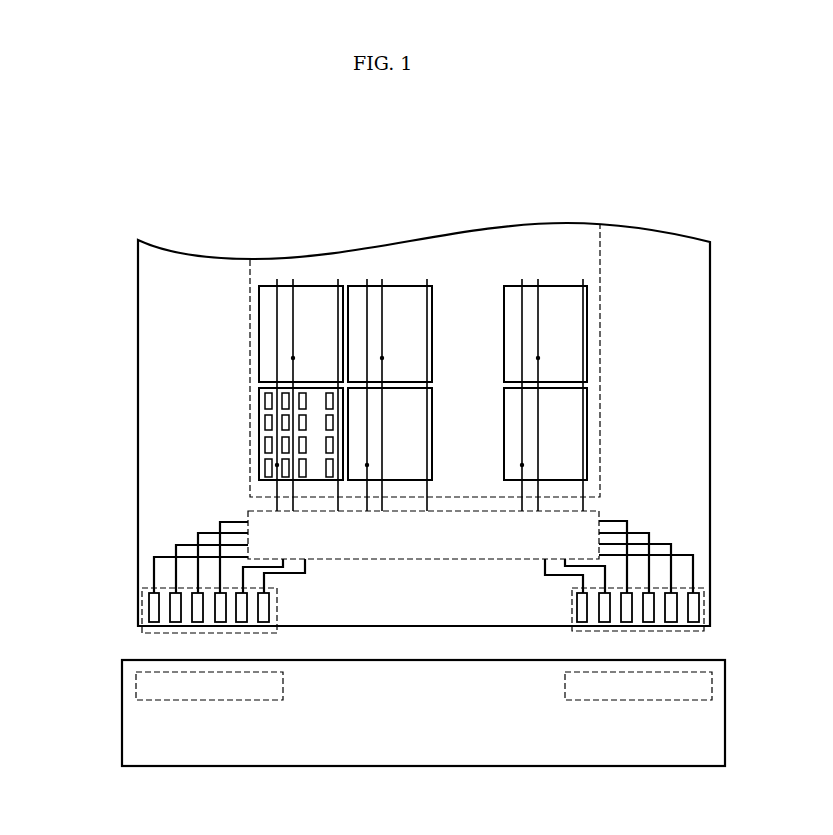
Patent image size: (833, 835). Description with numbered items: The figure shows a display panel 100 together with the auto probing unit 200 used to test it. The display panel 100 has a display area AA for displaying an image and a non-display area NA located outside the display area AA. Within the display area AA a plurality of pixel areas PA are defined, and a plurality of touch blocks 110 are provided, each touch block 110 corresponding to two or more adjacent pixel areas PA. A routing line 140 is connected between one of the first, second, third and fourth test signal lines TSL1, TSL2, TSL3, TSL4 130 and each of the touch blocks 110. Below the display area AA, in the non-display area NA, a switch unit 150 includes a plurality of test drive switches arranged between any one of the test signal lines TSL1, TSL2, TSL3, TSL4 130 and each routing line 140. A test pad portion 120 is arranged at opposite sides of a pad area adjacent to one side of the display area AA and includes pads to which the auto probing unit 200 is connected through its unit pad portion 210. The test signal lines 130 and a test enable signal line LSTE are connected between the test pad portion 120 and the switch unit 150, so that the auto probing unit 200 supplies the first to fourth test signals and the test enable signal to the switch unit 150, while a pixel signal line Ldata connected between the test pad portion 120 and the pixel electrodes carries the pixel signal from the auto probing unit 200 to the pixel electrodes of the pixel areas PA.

The display panel 100 is at (80, 341).
The display area AA is at (247, 338).
The non-display area NA is at (158, 371).
The pixel areas PA is at (256, 442).
The touch blocks 110 is at (262, 463).
The routing line 140 is at (278, 488).
The switch unit 150 is at (600, 515).
The test signal lines 130 is at (426, 549).
The first test signal line TSL1 is at (153, 558).
The second test signal line TSL2 is at (174, 545).
The third test signal line TSL3 is at (196, 533).
The fourth test signal line TSL4 is at (218, 522).
The pixel signal line Ldata is at (306, 569).
The test enable signal line LSTE is at (268, 582).
The test pad portion 120 is at (141, 609).
The auto probing unit 200 is at (441, 742).
The unit pad portion 210 is at (229, 695).